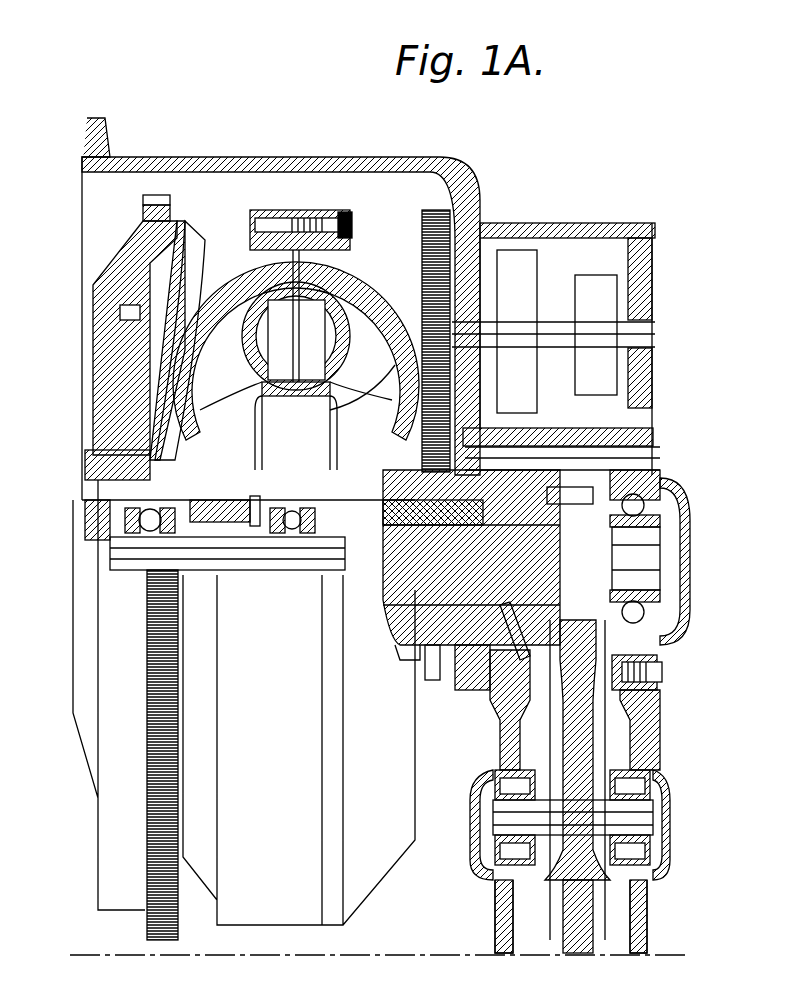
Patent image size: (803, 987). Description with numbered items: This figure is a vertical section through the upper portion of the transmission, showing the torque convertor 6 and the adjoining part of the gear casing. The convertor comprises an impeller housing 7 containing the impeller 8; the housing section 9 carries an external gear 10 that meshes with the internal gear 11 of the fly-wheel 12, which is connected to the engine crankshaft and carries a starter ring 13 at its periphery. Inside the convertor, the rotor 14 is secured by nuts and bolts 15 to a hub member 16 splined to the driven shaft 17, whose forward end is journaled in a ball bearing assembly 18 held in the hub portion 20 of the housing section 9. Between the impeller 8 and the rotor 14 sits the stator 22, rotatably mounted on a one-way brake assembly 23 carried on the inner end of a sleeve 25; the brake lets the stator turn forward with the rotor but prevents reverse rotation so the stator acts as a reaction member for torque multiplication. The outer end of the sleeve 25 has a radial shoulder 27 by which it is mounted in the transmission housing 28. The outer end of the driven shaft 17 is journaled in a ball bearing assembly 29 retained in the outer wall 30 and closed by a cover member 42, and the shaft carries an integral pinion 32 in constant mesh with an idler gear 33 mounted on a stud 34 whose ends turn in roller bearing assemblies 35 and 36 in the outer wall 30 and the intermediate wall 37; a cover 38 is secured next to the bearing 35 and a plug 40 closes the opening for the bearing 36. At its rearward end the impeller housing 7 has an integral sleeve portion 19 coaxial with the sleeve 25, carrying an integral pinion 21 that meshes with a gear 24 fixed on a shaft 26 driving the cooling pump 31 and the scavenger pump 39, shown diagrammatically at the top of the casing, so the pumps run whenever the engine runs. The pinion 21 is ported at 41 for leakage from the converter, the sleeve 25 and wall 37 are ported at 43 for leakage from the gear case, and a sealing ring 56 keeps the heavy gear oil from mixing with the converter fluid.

The torque convertor 6 is at (236, 222).
The impeller housing 7 is at (375, 265).
The impeller 8 is at (388, 305).
The housing section 9 is at (215, 240).
The external gear 10 is at (120, 313).
The internal gear 11 is at (179, 340).
The fly-wheel 12 is at (110, 268).
The starter ring 13 is at (143, 212).
The rotor 14 is at (210, 350).
The nuts and bolts 15 is at (218, 500).
The hub member 16 is at (240, 552).
The driven shaft 17 is at (275, 552).
The ball bearing assembly 18 is at (150, 508).
The sleeve portion 19 is at (402, 655).
The hub portion 20 is at (87, 490).
The pinion 21 is at (463, 690).
The stator 22 is at (316, 412).
The one-way brake assembly 23 is at (295, 508).
The gear 24 is at (440, 212).
The sleeve 25 is at (395, 510).
The shaft 26 is at (552, 325).
The shoulder 27 is at (505, 440).
The transmission housing 28 is at (408, 157).
The ball bearing assembly 29 is at (660, 503).
The outer wall 30 is at (655, 703).
The cooling pump 31 is at (515, 255).
The pinion 32 is at (572, 492).
The idler gear 33 is at (568, 722).
The stud 34 is at (635, 812).
The roller bearing assembly 35 is at (653, 778).
The roller bearing assembly 36 is at (497, 783).
The intermediate wall 37 is at (495, 733).
The cover 38 is at (665, 830).
The scavenger pump 39 is at (598, 285).
The plug 40 is at (470, 850).
The port 41 is at (430, 680).
The cover member 42 is at (683, 560).
The port 43 is at (515, 662).
The sealing ring 56 is at (420, 525).